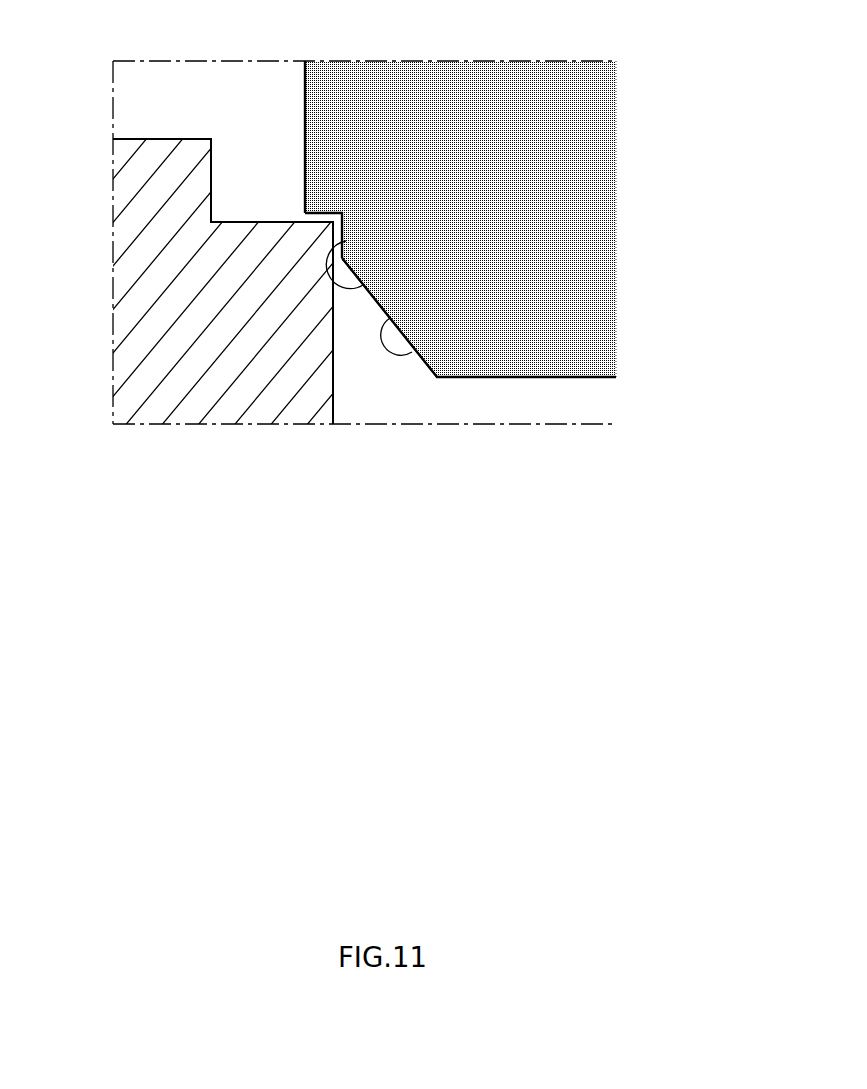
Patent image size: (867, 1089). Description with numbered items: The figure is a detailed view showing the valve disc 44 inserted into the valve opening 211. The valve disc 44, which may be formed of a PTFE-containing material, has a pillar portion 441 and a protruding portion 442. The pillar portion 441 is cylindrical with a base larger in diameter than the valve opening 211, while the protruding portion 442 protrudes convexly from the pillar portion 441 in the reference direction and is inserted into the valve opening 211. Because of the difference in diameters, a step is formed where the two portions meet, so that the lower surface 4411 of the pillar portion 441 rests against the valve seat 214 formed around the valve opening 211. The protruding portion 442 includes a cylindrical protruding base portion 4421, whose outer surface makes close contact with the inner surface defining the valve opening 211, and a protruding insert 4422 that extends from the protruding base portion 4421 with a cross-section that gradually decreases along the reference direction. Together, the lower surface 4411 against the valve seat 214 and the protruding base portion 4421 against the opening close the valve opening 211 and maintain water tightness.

The valve opening 211 is at (374, 398).
The valve seat 214 is at (318, 221).
The valve disc 44 is at (634, 132).
The pillar portion 441 is at (592, 86).
The lower surface 4411 is at (344, 217).
The protruding portion 442 is at (720, 212).
The protruding base portion 4421 is at (365, 286).
The protruding insert 4422 is at (413, 353).